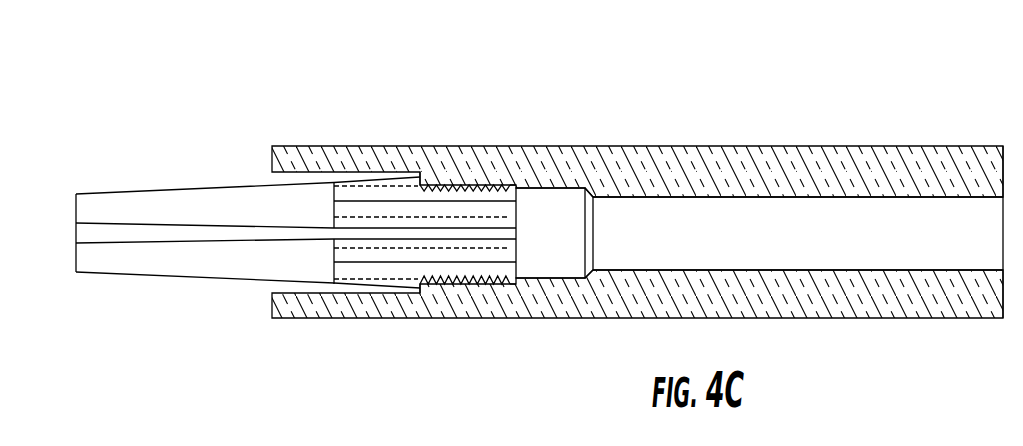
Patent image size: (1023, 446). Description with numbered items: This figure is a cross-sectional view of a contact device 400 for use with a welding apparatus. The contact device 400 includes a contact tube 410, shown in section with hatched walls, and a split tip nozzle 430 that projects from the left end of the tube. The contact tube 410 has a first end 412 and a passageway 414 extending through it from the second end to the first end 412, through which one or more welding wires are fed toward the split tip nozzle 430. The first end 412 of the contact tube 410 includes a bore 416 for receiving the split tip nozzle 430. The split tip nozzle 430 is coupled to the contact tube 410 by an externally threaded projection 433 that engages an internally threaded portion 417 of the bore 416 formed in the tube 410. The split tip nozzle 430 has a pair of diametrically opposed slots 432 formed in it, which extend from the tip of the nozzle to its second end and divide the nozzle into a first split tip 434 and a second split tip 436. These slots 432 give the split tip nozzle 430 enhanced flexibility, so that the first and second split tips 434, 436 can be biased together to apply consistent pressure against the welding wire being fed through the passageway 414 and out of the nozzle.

The contact device 400 is at (176, 58).
The contact tube 410 is at (948, 147).
The first end 412 is at (345, 145).
The passageway 414 is at (825, 215).
The bore 416 is at (405, 230).
The internally threaded portion 417 is at (481, 278).
The externally threaded projection 433 is at (485, 325).
The split tip nozzle 430 is at (101, 192).
The slots 432 is at (172, 235).
The first split tip 434 is at (170, 202).
The second split tip 436 is at (107, 262).